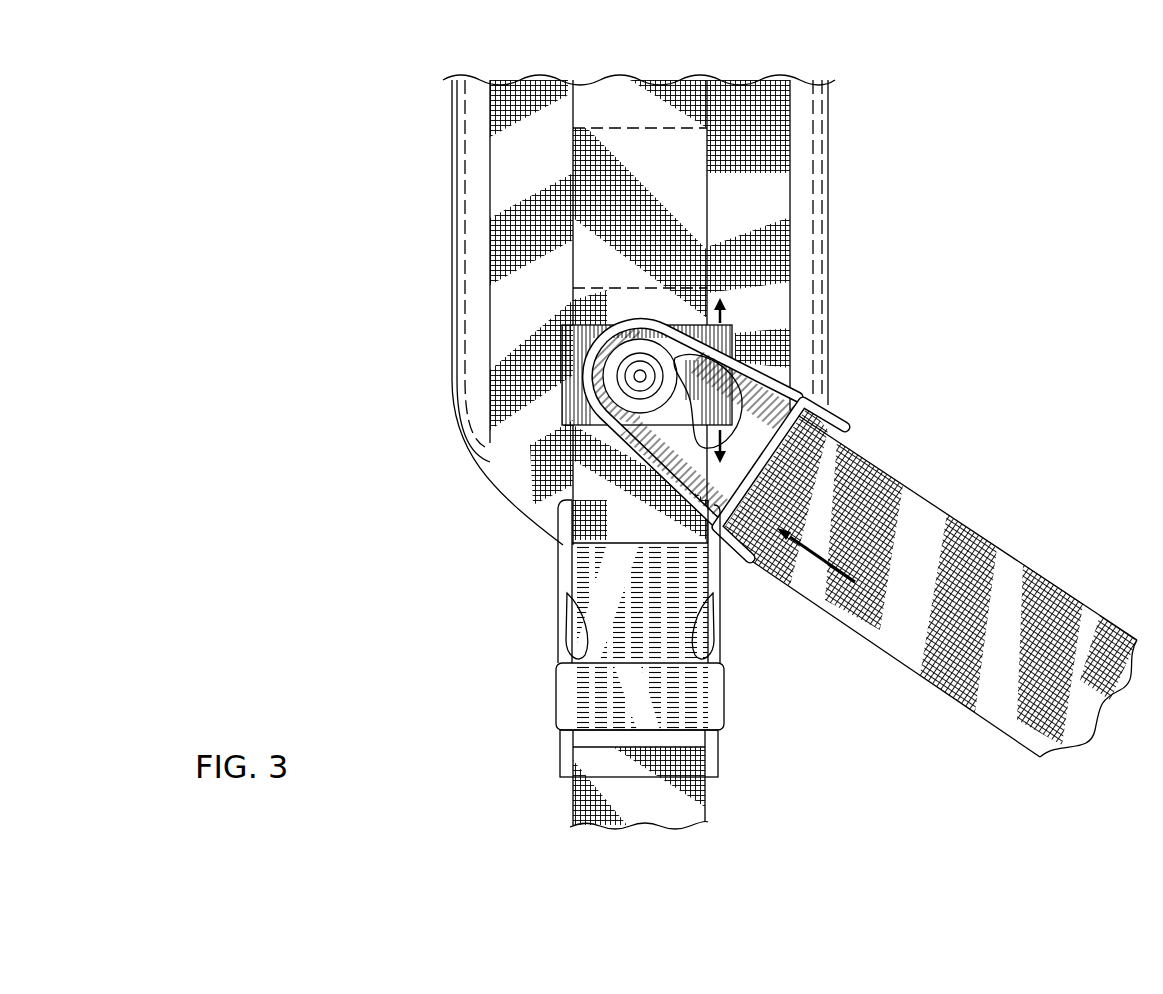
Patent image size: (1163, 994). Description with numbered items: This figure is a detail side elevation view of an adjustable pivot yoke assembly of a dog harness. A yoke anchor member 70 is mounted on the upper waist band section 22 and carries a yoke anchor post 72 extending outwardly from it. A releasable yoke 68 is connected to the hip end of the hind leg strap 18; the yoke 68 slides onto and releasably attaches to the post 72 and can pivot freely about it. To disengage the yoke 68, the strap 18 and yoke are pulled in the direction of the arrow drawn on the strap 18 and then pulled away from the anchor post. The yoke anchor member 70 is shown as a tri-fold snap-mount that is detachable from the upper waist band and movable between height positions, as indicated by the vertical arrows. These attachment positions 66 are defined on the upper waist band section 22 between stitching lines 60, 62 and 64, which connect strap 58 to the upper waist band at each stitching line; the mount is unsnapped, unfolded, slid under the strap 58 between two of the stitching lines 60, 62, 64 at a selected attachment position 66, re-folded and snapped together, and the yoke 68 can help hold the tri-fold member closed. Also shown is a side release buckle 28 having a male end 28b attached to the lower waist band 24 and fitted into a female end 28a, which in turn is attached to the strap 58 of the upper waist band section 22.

The hind leg strap 18 is at (1000, 565).
The upper waist band section 22 is at (510, 265).
The lower waist band 24 is at (728, 740).
The side release buckle 28 is at (560, 615).
The female end 28a is at (573, 690).
The male end 28b is at (567, 613).
The strap 58 is at (707, 110).
The stitching line 60 is at (577, 433).
The stitching line 62 is at (597, 288).
The stitching line 64 is at (583, 128).
The attachment positions 66 is at (714, 290).
The releasable yoke 68 is at (755, 398).
The yoke anchor member 70 is at (733, 333).
The yoke anchor post 72 is at (727, 385).